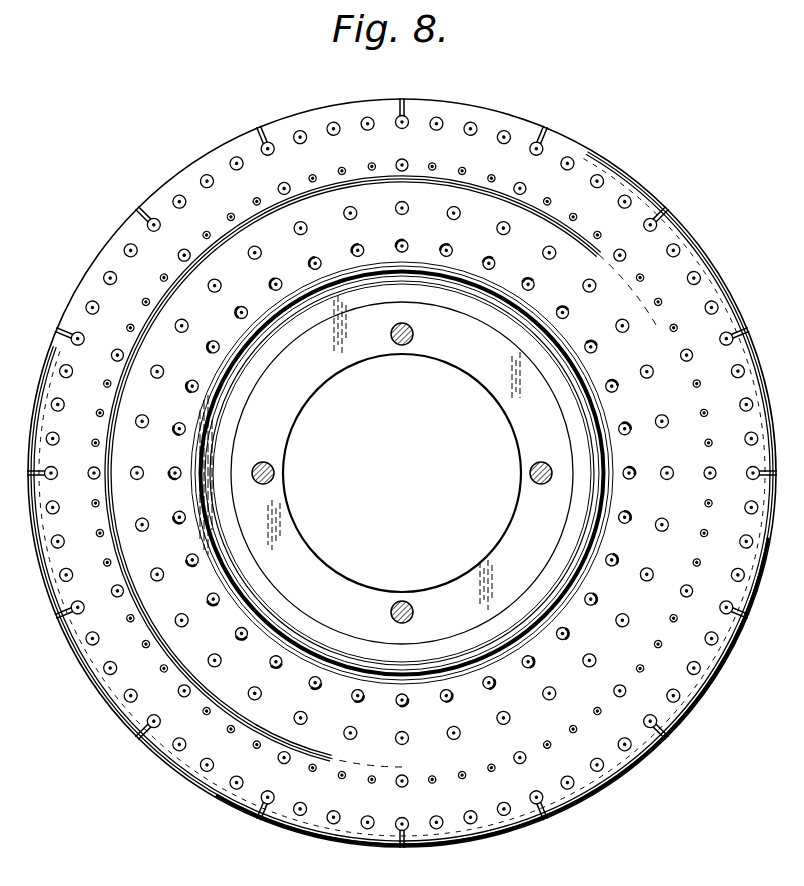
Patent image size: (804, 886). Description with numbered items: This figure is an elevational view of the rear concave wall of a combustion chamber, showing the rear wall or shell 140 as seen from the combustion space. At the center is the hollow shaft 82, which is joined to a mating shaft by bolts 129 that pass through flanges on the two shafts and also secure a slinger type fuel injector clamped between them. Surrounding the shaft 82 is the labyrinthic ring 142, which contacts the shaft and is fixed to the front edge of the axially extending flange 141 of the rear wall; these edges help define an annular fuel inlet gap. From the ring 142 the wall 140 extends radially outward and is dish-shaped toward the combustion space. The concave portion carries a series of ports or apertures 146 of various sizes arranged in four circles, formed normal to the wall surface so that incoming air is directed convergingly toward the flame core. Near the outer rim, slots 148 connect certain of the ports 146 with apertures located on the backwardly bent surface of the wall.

The hollow shaft 82 is at (500, 381).
The bolts 129 is at (403, 346).
The rear wall or shell 140 is at (620, 223).
The axially extending flange 141 is at (312, 297).
The labyrinthic ring 142 is at (273, 343).
The ports or apertures 146 is at (469, 168).
The slots 148 is at (405, 99).